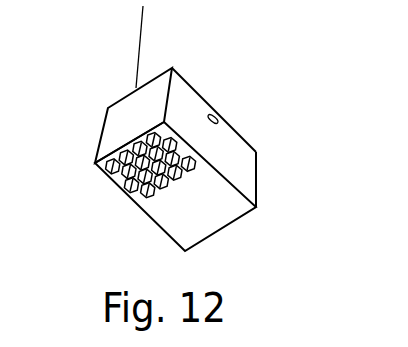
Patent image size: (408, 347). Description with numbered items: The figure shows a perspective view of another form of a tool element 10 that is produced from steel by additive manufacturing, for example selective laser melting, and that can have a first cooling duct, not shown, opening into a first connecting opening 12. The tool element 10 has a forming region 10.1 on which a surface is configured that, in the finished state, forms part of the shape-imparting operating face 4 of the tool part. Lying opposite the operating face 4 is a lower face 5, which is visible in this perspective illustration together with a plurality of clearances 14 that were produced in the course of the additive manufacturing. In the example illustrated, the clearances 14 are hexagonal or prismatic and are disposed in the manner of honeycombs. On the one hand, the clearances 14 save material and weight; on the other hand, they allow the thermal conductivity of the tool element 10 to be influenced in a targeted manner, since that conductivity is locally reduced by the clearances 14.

The operating face 4 is at (142, 44).
The lower face 5 is at (195, 205).
The tool element 10 is at (203, 105).
The forming region 10.1 is at (108, 106).
The first connecting opening 12 is at (216, 109).
The clearances 14 is at (104, 170).